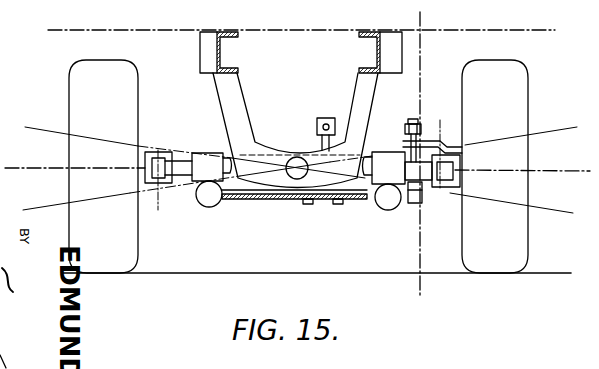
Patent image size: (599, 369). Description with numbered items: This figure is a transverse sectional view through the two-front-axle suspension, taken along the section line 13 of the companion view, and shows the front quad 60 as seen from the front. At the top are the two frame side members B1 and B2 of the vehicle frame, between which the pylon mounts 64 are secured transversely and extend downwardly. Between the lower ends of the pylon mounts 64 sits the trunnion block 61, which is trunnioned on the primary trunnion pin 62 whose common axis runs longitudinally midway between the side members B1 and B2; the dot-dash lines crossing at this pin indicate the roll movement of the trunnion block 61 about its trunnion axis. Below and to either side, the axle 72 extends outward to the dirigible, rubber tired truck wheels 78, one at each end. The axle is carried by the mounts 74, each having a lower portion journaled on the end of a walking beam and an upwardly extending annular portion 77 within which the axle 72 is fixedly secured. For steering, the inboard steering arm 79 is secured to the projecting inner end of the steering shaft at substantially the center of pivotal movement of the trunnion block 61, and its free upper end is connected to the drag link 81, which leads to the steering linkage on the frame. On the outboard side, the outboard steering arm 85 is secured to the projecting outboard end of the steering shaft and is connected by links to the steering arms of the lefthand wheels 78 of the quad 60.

The section line 13 is at (435, 15).
The front quad 60 is at (218, 231).
The trunnion block 61 is at (304, 204).
The primary trunnion pin 62 is at (297, 170).
The pylon mount 64 is at (228, 88).
The axle 72 is at (172, 190).
The mount 74 is at (212, 150).
The upwardly extending annular portion 77 is at (190, 151).
The truck wheel 78 is at (78, 87).
The inboard steering arm 79 is at (322, 141).
The drag link 81 is at (317, 126).
The outboard steering arm 85 is at (412, 204).
The frame side member B1 is at (402, 53).
The frame side member B2 is at (200, 57).